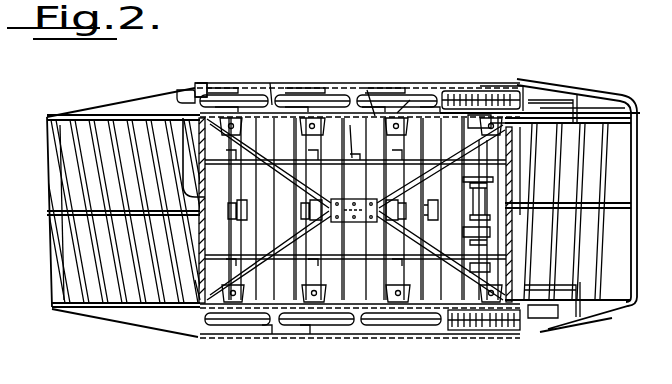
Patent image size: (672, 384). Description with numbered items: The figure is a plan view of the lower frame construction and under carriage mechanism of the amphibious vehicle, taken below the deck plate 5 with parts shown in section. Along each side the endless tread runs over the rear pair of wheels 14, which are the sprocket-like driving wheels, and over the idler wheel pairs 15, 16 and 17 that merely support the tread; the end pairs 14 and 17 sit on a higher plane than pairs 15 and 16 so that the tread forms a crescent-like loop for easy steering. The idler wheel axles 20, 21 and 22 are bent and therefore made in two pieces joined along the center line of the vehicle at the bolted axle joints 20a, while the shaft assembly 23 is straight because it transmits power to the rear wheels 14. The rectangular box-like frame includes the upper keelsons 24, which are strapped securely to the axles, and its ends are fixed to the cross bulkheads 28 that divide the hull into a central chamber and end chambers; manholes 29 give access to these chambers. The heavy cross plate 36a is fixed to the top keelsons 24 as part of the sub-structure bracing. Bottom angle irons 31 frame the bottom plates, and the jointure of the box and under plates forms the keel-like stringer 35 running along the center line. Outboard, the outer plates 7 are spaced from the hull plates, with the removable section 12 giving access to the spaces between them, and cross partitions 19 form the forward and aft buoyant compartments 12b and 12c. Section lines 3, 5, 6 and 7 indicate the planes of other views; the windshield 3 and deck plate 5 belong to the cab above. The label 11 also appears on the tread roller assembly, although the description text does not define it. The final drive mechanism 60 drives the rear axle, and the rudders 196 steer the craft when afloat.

The windshield 3 is at (44, 310).
The deck plate 5 is at (250, 378).
The section line 6- 6 is at (173, 226).
The plates 7 is at (480, 25).
The roller 11 is at (236, 90).
The removable section 12 is at (314, 65).
The buoyant compartment 12b is at (133, 105).
The buoyant compartment 12c is at (565, 93).
The rear pair of wheels 14 is at (497, 330).
The wheel pair 15 is at (375, 326).
The wheel pair 16 is at (338, 325).
The wheel pair 17 is at (262, 325).
The cross partitions 19 is at (192, 90).
The rudders 196 is at (593, 95).
The idler wheel axle 20 is at (214, 118).
The axle joint 20a is at (250, 204).
The idler wheel axle 21 is at (352, 125).
The idler wheel axle 22 is at (410, 100).
The shaft assembly 23 is at (476, 90).
The upper keelsons 24 is at (437, 214).
The cross bulkheads 28 is at (197, 285).
The manholes 29 is at (183, 118).
The bottom angle irons 31 is at (276, 105).
The keel-like stringer 35 is at (64, 215).
The heavy cross plate 36a is at (367, 90).
The final drive mechanism 60 is at (500, 199).